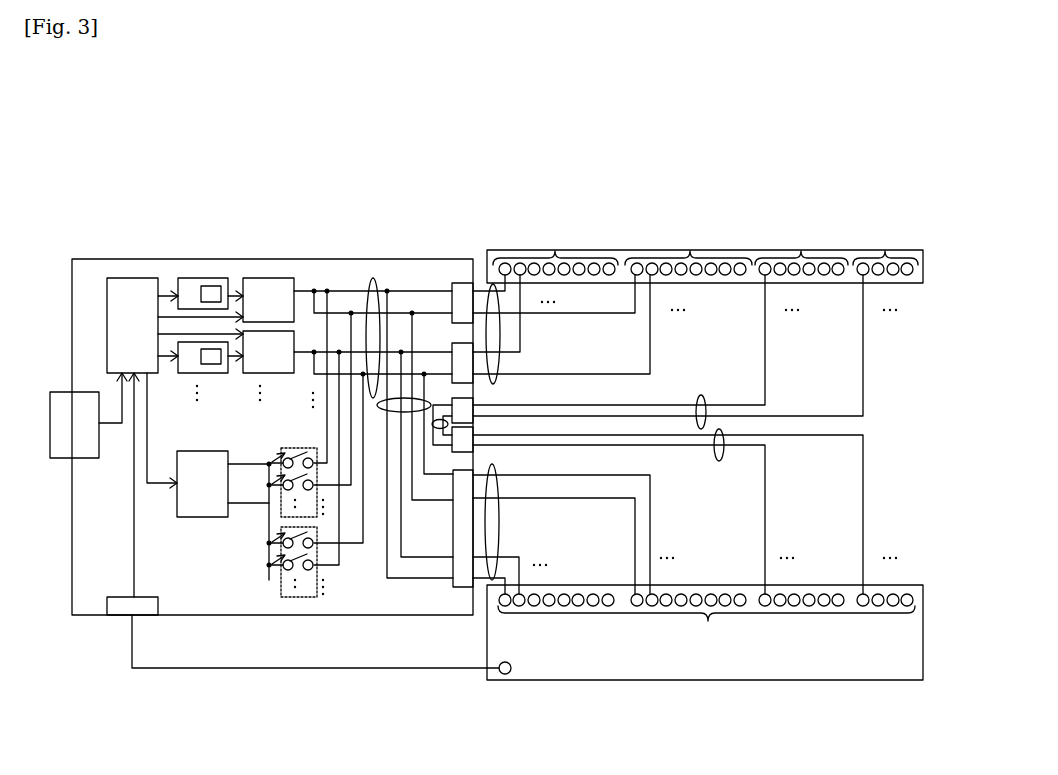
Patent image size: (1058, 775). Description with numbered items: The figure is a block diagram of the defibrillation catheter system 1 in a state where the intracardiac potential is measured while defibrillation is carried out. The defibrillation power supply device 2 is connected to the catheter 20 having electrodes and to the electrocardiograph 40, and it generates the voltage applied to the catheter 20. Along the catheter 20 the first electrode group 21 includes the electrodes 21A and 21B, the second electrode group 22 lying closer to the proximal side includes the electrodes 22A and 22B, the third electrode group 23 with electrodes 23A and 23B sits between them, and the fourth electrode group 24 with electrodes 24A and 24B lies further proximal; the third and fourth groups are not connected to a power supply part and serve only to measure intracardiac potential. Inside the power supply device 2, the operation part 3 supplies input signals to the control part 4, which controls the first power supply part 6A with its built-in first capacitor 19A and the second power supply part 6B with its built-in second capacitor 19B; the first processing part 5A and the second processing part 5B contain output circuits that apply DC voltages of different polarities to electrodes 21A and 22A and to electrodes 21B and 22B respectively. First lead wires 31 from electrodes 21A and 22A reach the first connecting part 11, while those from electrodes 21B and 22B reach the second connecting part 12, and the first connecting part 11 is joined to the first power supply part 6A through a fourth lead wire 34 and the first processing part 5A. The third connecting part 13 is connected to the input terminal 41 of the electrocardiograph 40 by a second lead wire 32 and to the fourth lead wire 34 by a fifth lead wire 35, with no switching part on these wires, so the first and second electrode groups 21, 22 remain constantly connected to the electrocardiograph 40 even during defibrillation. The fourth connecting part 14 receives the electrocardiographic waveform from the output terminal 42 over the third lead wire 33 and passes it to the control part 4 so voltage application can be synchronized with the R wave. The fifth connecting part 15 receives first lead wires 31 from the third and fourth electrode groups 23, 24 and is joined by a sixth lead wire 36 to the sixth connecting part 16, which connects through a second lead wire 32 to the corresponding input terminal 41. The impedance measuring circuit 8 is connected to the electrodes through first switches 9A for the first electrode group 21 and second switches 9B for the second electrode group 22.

The gas supply system 1 is at (75, 205).
The defibrillation power supply device 2 is at (100, 258).
The operation part 3 is at (50, 430).
The control part 4 is at (133, 278).
The first processing part 5A is at (265, 278).
The second processing part 5B is at (256, 373).
The first power supply part 6A is at (220, 264).
The second power supply part 6B is at (205, 381).
The impedance measuring circuit 8 is at (200, 517).
The first switch 9A is at (272, 484).
The second switch 9B is at (272, 564).
The first connecting part 11 is at (462, 283).
The second connecting part 12 is at (452, 365).
The third connecting part 13 is at (463, 587).
The fourth connecting part 14 is at (118, 615).
The fifth connecting part 15 is at (476, 401).
The sixth connecting part 16 is at (476, 453).
The first capacitor 19A is at (215, 286).
The second capacitor 19B is at (210, 364).
The catheter 20 is at (707, 238).
The first electrode group 21 is at (548, 234).
The 1-1 electrode 21A is at (505, 262).
The 1-2 electrode 21B is at (520, 262).
The second electrode group 22 is at (680, 234).
The 2-1 electrode 22A is at (636, 262).
The 2-2 electrode 22B is at (651, 262).
The third electrode group 23 is at (782, 234).
The 3-1 electrode 23A is at (765, 262).
The 3-2 electrode 23B is at (780, 262).
The fourth electrode group 24 is at (864, 234).
The 4-1 electrode 24A is at (863, 262).
The 4-2 electrode 24B is at (878, 262).
The first lead wire 31 is at (499, 356).
The second lead wire 32 is at (499, 513).
The third lead wire 33 is at (465, 668).
The fourth lead wire 34 is at (372, 278).
The fifth lead wire 35 is at (380, 410).
The sixth lead wire 36 is at (437, 428).
The electrocardiograph 40 is at (705, 657).
The input terminal 41 is at (706, 622).
The output terminal 42 is at (506, 674).